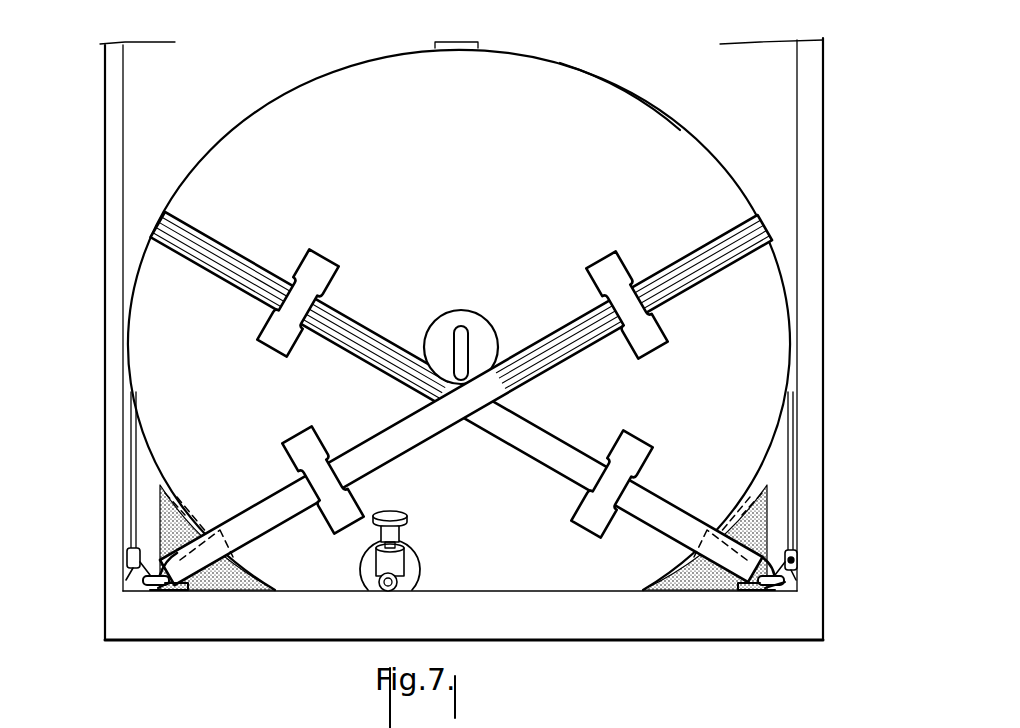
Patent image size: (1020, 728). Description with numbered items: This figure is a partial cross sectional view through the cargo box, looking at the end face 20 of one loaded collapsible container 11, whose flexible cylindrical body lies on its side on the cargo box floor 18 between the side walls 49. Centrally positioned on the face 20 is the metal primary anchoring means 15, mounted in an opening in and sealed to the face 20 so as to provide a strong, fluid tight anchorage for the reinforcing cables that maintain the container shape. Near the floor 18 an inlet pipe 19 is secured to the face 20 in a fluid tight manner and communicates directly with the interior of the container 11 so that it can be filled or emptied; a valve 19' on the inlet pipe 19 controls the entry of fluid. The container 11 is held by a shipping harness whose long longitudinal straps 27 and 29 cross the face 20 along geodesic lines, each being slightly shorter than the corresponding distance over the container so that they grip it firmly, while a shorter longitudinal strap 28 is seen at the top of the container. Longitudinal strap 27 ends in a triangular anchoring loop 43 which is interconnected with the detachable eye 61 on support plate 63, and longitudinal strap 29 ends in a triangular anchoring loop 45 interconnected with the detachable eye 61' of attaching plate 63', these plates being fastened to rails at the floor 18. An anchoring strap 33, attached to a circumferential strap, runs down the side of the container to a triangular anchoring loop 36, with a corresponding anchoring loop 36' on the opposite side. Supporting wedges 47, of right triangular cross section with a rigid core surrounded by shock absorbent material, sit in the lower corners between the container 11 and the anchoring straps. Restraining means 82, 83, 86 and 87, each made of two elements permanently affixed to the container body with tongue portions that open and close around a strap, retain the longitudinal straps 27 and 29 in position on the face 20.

The collapsible container 11 is at (584, 88).
The primary anchoring means 15 is at (478, 318).
The cargo box floor 18 is at (710, 636).
The inlet pipe 19 is at (415, 565).
The valve 19' is at (416, 515).
The face 20 is at (485, 142).
The longitudinal strap 27 is at (686, 258).
The longitudinal strap 28 is at (478, 46).
The longitudinal strap 29 is at (230, 265).
The anchoring strap 33 is at (137, 476).
The triangular anchoring loop 36 is at (101, 562).
The triangular anchoring loop 36' is at (834, 548).
The triangular anchoring loop 43 is at (176, 592).
The triangular anchoring loop 45 is at (757, 593).
The supporting wedge 47 is at (158, 512).
The side wall 49 is at (108, 396).
The detachable eye 61 is at (110, 588).
The detachable eye 61' is at (792, 624).
The support plate 63 is at (142, 632).
The attaching plate 63' is at (829, 583).
The restraining means 82 is at (318, 443).
The restraining means 83 is at (647, 343).
The restraining means 86 is at (640, 458).
The restraining means 87 is at (340, 270).